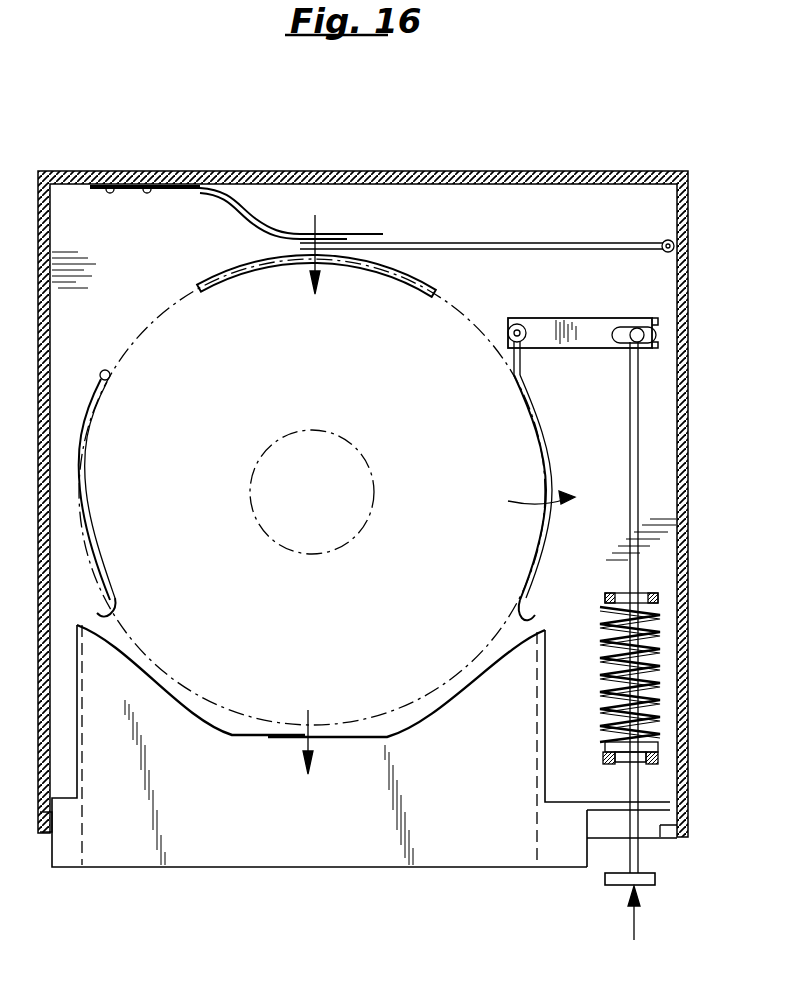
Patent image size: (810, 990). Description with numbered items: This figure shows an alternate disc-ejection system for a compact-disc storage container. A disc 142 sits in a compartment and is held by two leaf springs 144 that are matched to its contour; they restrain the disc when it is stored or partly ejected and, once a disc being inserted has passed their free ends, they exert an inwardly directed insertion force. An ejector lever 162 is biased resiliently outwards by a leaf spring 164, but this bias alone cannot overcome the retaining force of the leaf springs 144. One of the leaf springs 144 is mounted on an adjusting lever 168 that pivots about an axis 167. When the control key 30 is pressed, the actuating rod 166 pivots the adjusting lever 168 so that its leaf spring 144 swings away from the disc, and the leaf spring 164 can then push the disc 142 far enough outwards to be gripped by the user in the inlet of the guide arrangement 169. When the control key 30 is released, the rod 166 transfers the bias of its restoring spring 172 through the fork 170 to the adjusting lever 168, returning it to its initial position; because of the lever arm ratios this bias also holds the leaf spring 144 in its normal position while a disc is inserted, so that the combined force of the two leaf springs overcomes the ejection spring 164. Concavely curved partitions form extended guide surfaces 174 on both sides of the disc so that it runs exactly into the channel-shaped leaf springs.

The control key 30 is at (657, 879).
The disc 142 is at (348, 728).
The leaf springs 144 is at (87, 447).
The ejector lever 162 is at (566, 243).
The leaf spring 164 is at (193, 206).
The actuating rod 166 is at (634, 420).
The axis 167 is at (520, 325).
The adjusting lever 168 is at (597, 348).
The guide arrangement 169 is at (323, 858).
The fork 170 is at (646, 322).
The restoring spring 172 is at (655, 631).
The extended guide surfaces 174 is at (178, 723).